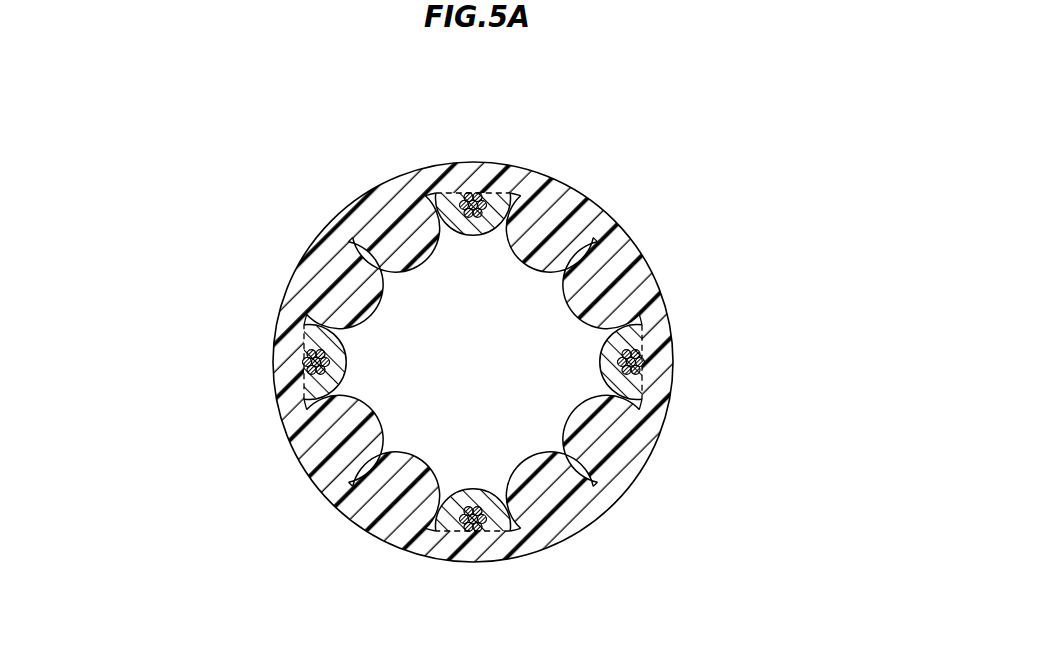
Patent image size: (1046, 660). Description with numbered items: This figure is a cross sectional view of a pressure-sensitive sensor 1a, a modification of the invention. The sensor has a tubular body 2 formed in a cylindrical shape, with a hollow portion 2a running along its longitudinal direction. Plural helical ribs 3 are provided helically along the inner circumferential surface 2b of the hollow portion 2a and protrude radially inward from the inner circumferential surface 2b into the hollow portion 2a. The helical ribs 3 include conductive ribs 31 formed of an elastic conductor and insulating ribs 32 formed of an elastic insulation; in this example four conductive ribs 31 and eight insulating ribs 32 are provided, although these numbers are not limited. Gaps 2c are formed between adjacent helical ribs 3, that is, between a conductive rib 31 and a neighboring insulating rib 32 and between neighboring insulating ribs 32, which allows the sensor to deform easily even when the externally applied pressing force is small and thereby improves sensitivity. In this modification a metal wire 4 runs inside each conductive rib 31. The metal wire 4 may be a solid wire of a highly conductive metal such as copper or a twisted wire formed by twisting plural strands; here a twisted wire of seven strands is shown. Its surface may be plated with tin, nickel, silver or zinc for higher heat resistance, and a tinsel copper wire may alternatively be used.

The pressure-sensitive sensor 1a is at (317, 157).
The tubular body 2 is at (296, 320).
The hollow portion 2a is at (428, 377).
The inner circumferential surface 2b is at (350, 479).
The gap 2c is at (427, 523).
The helical rib 3 is at (614, 309).
The conductive rib 31 is at (495, 188).
The insulating rib 32 is at (543, 222).
The metal wire 4 is at (642, 367).